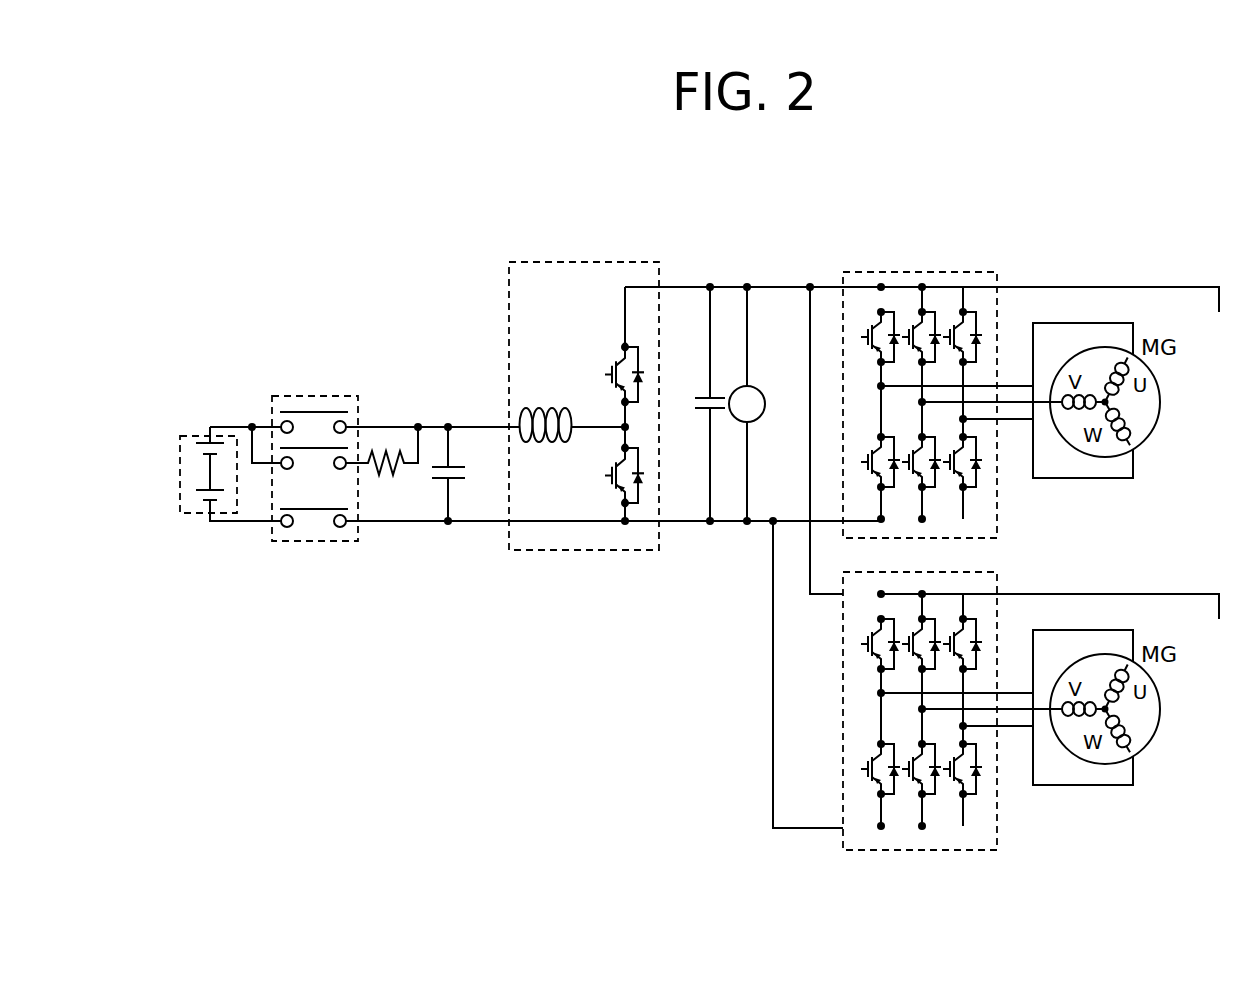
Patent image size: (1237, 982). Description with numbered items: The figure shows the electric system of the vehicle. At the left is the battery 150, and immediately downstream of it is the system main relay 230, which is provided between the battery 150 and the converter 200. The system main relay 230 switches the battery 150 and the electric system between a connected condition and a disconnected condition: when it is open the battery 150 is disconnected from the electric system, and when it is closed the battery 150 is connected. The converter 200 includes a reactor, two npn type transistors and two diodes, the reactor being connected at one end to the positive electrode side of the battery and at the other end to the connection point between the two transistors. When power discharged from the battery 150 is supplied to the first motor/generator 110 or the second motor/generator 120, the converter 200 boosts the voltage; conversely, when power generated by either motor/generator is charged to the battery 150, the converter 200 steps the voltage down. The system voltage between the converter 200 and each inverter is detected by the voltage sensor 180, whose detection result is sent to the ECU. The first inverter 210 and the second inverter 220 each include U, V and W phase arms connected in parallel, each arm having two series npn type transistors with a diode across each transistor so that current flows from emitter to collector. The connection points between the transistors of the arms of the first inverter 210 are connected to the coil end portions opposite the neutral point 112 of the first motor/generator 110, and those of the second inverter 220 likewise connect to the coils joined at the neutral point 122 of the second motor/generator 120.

The battery 150 is at (197, 432).
The system main relay 230 is at (320, 396).
The converter 200 is at (644, 262).
The voltage sensor 180 is at (758, 418).
The first inverter 210 is at (997, 492).
The second inverter 220 is at (997, 799).
The first motor/generator 110 is at (1147, 437).
The neutral point 112 is at (1105, 400).
The second motor/generator 120 is at (1147, 744).
The neutral point 122 is at (1105, 707).